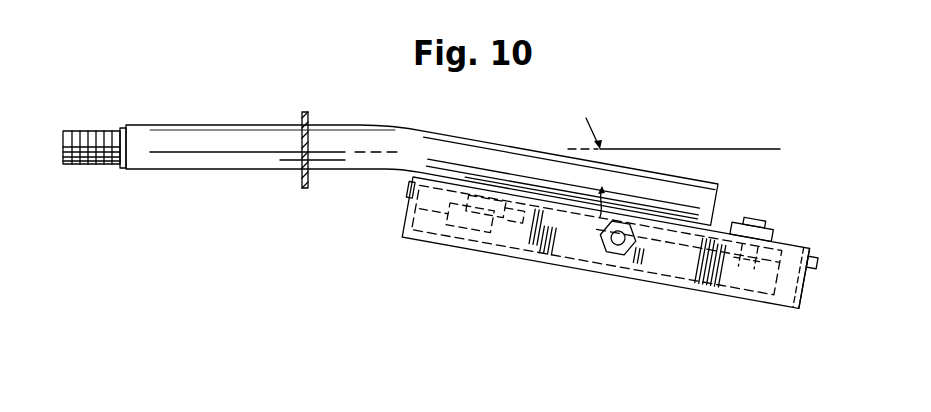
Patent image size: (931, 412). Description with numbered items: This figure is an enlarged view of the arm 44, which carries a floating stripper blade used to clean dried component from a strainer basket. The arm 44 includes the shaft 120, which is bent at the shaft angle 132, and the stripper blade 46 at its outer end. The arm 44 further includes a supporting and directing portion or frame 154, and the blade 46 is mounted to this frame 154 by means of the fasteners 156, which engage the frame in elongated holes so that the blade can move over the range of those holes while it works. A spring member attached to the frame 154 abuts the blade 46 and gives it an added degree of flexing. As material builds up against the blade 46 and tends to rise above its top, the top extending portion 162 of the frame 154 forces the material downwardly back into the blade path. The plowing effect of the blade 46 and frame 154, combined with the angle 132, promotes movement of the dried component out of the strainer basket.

The arm 44 is at (213, 108).
The shaft 120 is at (347, 137).
The shaft angle 132 is at (632, 178).
The frame 154 is at (773, 312).
The fasteners 156 is at (493, 224).
The stripper blade 46 is at (817, 262).
The top extending portion 162 is at (808, 286).